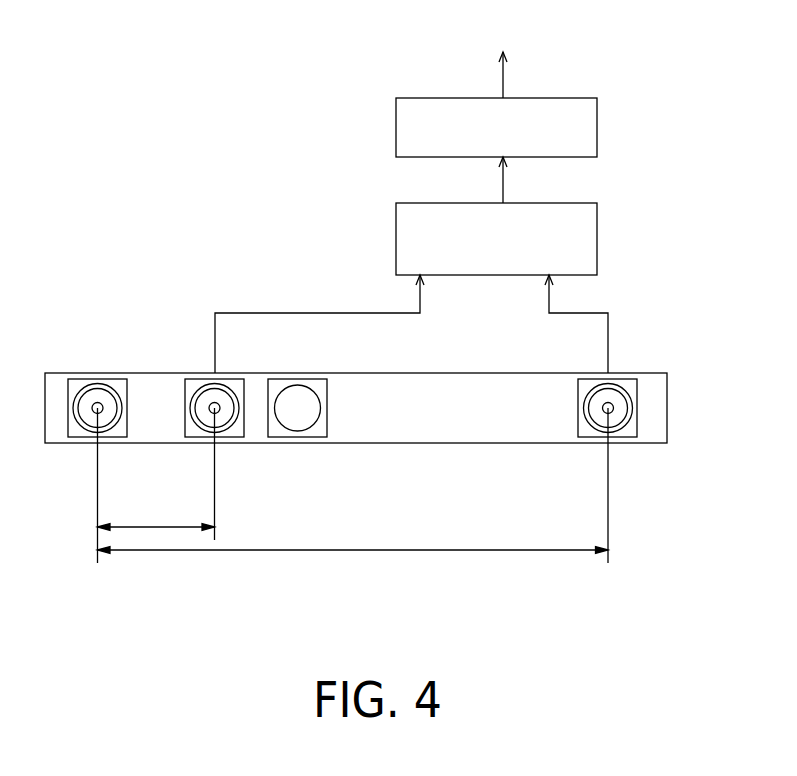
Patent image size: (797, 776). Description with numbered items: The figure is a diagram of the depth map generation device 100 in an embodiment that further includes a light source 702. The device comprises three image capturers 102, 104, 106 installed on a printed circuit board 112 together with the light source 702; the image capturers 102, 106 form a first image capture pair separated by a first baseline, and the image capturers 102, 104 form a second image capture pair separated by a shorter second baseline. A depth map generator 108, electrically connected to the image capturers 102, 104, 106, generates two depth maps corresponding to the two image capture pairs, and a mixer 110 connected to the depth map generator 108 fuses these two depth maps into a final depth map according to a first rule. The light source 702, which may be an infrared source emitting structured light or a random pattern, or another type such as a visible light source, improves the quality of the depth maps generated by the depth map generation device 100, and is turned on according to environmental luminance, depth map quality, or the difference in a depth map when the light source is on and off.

The depth map generation device 100 is at (162, 115).
The image capturer 102 is at (73, 440).
The image capturer 104 is at (230, 440).
The image capturer 106 is at (627, 443).
The depth map generator 108 is at (597, 230).
The mixer 110 is at (597, 130).
The printed circuit board 112 is at (668, 412).
The light source 702 is at (308, 440).